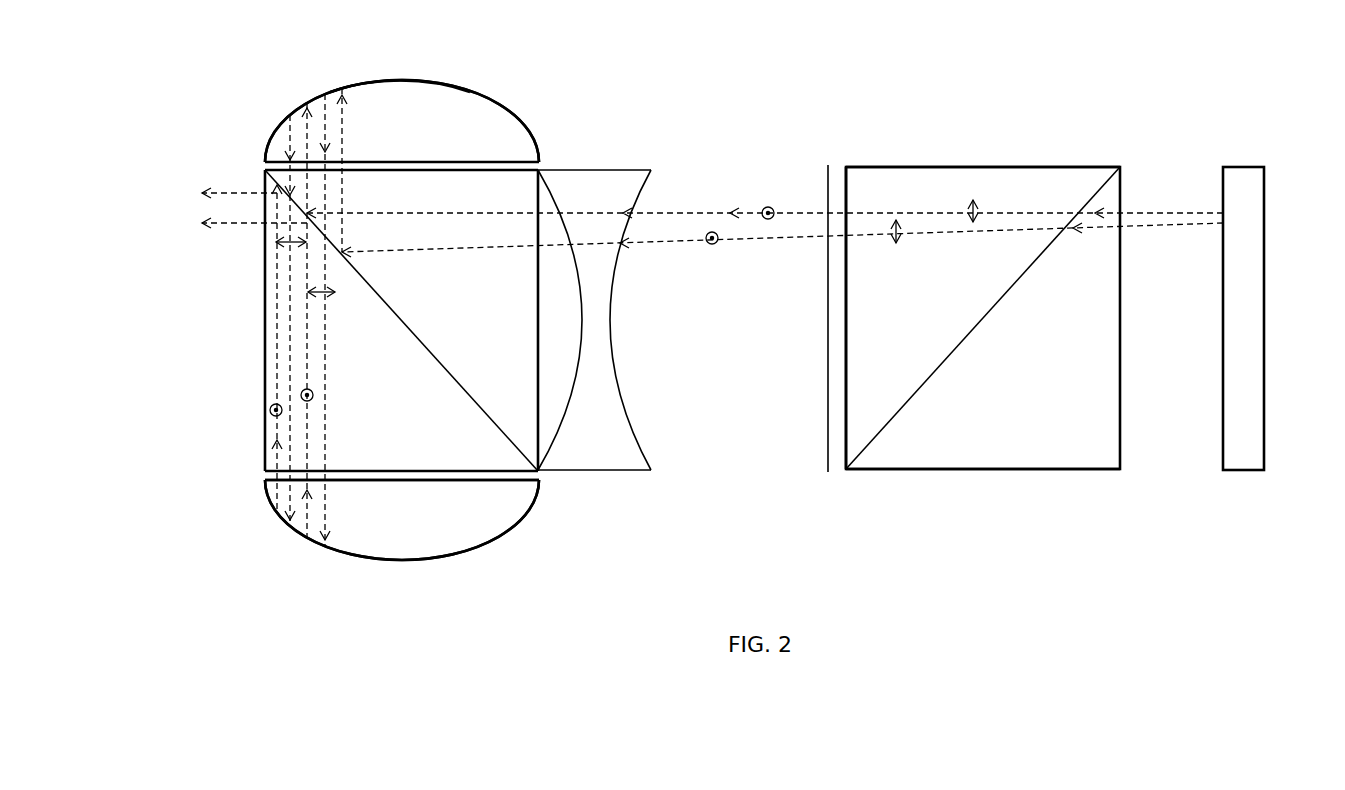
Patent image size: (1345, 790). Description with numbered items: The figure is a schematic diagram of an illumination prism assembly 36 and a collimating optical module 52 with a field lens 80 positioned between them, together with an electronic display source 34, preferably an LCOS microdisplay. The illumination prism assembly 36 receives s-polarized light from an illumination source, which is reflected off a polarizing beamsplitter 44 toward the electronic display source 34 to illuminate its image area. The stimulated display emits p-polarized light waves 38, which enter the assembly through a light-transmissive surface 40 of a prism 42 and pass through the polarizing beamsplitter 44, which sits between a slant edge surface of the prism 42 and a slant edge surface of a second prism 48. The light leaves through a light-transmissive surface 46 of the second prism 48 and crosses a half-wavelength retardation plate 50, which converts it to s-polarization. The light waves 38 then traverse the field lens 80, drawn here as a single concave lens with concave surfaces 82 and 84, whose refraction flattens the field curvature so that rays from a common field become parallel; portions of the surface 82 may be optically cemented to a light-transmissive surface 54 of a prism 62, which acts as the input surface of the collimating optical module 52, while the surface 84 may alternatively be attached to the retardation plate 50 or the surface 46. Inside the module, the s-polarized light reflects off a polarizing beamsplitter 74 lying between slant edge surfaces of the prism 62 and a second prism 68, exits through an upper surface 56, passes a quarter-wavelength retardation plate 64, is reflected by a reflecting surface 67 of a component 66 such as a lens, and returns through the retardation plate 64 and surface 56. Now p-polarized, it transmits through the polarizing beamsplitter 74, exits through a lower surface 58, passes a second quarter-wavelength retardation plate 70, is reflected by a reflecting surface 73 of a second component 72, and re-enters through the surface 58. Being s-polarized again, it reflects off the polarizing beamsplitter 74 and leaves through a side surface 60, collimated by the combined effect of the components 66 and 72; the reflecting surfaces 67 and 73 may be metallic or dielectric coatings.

The electronic display source 34 is at (1267, 251).
The illumination prism assembly 36 is at (967, 348).
The light waves 38 is at (1150, 213).
The light-transmissive surface 40 is at (1121, 436).
The prism 42 is at (1087, 453).
The polarizing beamsplitter 44 is at (948, 362).
The light-transmissive surface 46 is at (847, 417).
The second prism 48 is at (875, 194).
The half-wavelength retardation plate 50 is at (828, 440).
The collimating optical module 52 is at (369, 316).
The light-transmissive surface 54 is at (538, 324).
The upper surface 56 is at (445, 171).
The lower surface 58 is at (403, 471).
The side surface 60 is at (263, 288).
The prism 62 is at (523, 188).
The quarter-wavelength retardation plate 64 is at (492, 160).
The component 66 is at (445, 107).
The reflecting surface 67 is at (397, 80).
The second prism 68 is at (457, 440).
The second quarter-wavelength retardation plate 70 is at (525, 482).
The second component 72 is at (435, 547).
The reflecting surface 73 is at (358, 558).
The polarizing beamsplitter 74 is at (401, 322).
The field lens 80 is at (614, 365).
The concave surface 82 is at (580, 377).
The concave surface 84 is at (618, 419).